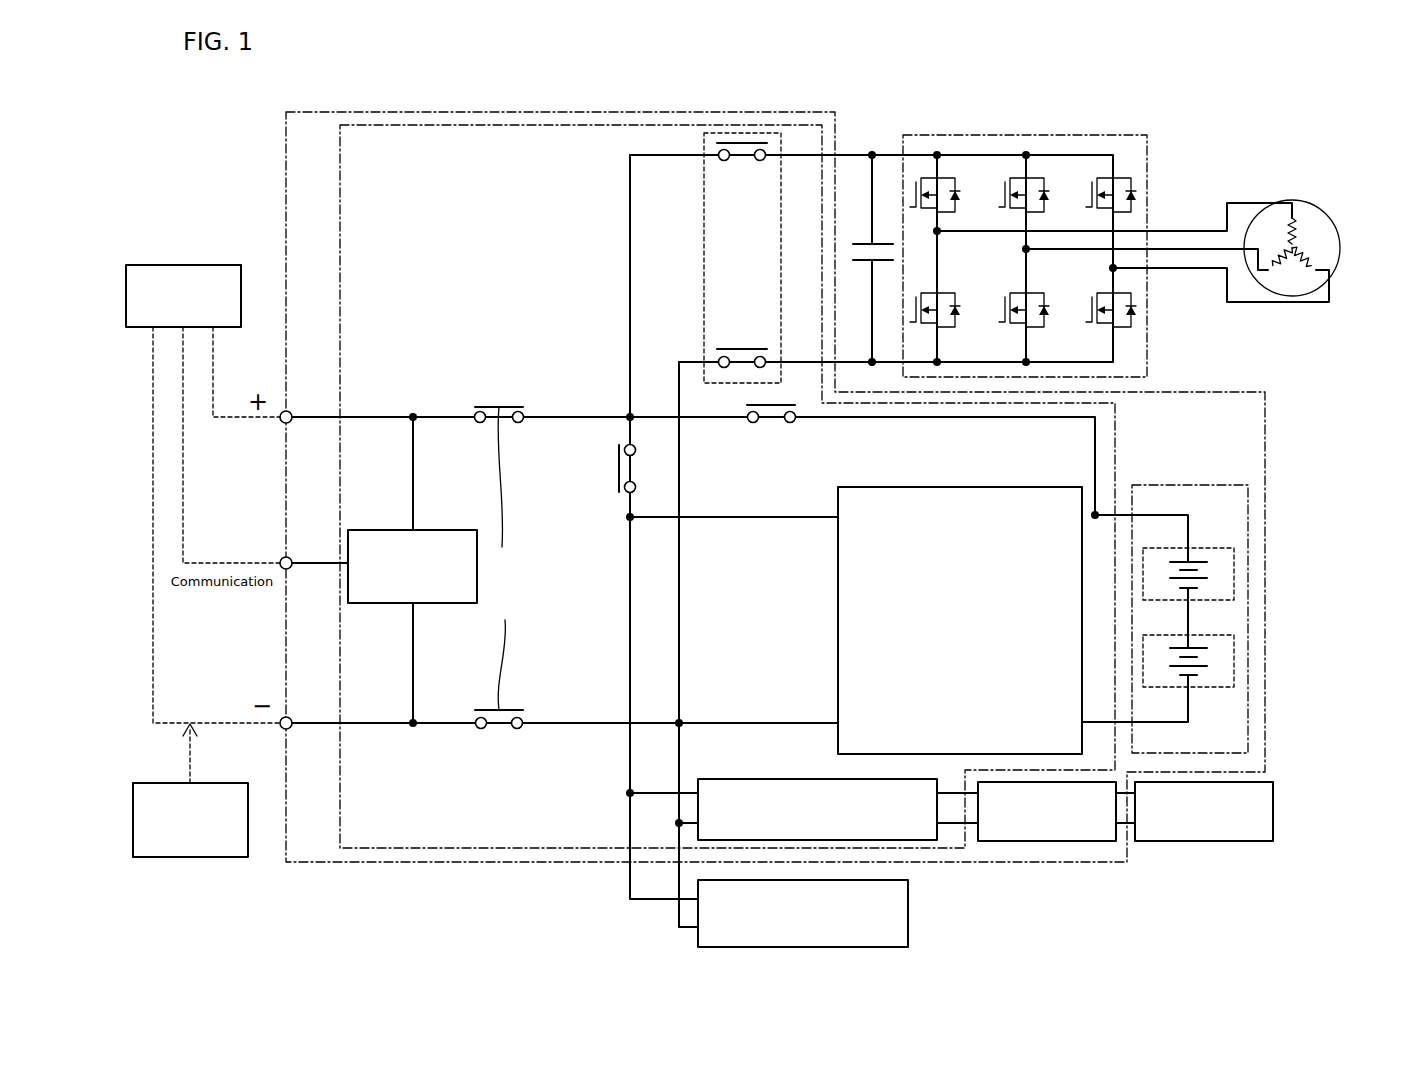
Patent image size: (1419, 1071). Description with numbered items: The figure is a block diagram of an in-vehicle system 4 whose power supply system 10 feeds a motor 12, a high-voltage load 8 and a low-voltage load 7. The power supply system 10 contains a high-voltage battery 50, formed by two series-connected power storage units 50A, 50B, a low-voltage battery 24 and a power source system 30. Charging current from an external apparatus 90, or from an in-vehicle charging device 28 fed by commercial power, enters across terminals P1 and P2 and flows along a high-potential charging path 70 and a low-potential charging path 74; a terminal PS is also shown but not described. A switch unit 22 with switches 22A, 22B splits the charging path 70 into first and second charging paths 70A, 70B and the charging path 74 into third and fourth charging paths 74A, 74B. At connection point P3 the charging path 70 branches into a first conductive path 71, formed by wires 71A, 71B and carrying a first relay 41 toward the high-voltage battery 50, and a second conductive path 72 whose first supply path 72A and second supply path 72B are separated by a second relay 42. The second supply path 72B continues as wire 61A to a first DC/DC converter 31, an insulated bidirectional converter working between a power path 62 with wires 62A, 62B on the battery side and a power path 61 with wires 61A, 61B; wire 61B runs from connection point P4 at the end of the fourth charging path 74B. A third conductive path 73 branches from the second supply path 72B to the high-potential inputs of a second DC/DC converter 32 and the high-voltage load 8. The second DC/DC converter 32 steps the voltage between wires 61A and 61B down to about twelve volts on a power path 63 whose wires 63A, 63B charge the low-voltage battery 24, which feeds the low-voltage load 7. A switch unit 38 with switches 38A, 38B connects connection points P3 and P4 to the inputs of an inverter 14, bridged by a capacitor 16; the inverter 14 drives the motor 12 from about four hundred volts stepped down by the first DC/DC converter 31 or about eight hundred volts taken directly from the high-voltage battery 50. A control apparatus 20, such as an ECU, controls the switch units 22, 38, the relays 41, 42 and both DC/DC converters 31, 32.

The in-vehicle system 4 is at (1362, 162).
The low-voltage load 7 is at (1196, 843).
The high-voltage load 8 is at (908, 920).
The power supply system 10 is at (1268, 410).
The motor 12 is at (1302, 200).
The inverter 14 is at (1148, 145).
The capacitor 16 is at (868, 262).
The control apparatus 20 is at (440, 605).
The switch unit 22 is at (530, 558).
The switch 22A is at (510, 492).
The switch 22B is at (510, 650).
The low-voltage battery 24 is at (1068, 843).
The in-vehicle charging device 28 is at (213, 783).
The power source system 30 is at (1120, 432).
The first DC/DC converter 31 is at (985, 487).
The second DC/DC converter 32 is at (926, 842).
The switch unit 38 is at (772, 230).
The switch 38A is at (740, 143).
The switch 38B is at (740, 349).
The first relay 41 is at (755, 450).
The second relay 42 is at (625, 468).
The high-voltage battery 50 is at (1242, 592).
The power storage unit 50A is at (1236, 570).
The power storage unit 50B is at (1236, 657).
The power path 61 is at (759, 577).
The wire 61A is at (745, 520).
The wire 61B is at (785, 720).
The power path 62 is at (1214, 583).
The wire 62A is at (1152, 515).
The wire 62B is at (1190, 705).
The power path 63 is at (911, 849).
The wire 63A is at (950, 790).
The wire 63B is at (955, 823).
The charging path 70 is at (500, 363).
The first charging path 70A is at (447, 415).
The second charging path 70B is at (531, 385).
The first conductive path 71 is at (772, 462).
The wire 71A is at (746, 421).
The wire 71B is at (798, 444).
The second conductive path 72 is at (593, 480).
The first supply path 72A is at (620, 435).
The second supply path 72B is at (593, 504).
The third conductive path 73 is at (628, 610).
The charging path 74 is at (499, 771).
The third charging path 74A is at (447, 728).
The fourth charging path 74B is at (533, 758).
The external apparatus 90 is at (190, 265).
The terminal P1 is at (292, 410).
The terminal P2 is at (292, 716).
The connection point P3 is at (630, 417).
The connection point P4 is at (681, 722).
The communication terminal PS is at (292, 556).